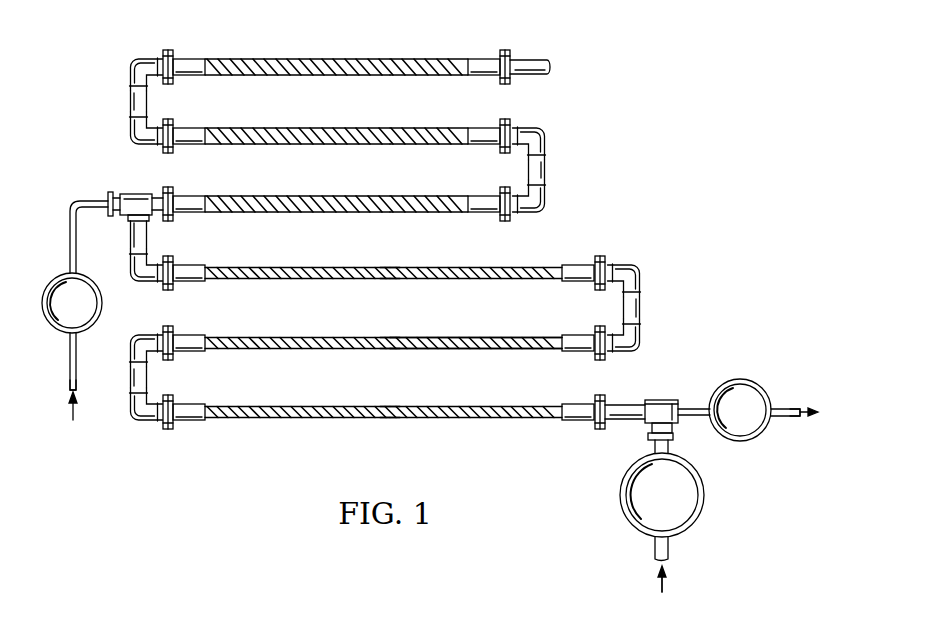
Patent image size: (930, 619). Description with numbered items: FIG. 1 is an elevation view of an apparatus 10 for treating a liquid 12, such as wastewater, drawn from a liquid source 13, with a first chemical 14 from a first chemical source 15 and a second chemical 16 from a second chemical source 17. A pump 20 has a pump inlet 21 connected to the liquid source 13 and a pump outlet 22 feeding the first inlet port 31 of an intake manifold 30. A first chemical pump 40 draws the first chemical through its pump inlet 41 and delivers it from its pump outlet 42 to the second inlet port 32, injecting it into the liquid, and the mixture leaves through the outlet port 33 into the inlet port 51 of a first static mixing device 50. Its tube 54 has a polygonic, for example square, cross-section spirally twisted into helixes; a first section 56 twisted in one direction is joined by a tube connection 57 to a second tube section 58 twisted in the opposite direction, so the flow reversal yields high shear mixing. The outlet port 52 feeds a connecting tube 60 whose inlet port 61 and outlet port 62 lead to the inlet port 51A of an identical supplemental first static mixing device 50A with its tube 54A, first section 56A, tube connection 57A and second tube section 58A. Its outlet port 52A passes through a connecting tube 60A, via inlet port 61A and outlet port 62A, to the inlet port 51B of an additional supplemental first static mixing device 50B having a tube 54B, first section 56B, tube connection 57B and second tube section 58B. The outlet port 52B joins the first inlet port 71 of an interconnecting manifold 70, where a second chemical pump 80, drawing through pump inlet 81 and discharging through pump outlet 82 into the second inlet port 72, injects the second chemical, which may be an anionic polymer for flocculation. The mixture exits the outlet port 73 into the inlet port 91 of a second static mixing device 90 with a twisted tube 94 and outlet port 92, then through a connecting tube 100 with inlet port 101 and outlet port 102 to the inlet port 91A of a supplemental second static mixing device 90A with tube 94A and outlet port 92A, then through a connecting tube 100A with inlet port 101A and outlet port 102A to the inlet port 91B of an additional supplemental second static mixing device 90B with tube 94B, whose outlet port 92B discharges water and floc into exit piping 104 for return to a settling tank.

The apparatus 10 is at (108, 42).
The liquid 12 is at (667, 583).
The liquid source 13 is at (659, 583).
The first chemical 14 is at (820, 408).
The first chemical source 15 is at (790, 406).
The second chemical 16 is at (73, 417).
The second chemical source 17 is at (70, 391).
The pump 20 is at (703, 500).
The pump inlet 21 is at (668, 545).
The pump outlet 22 is at (648, 440).
The intake manifold 30 is at (662, 401).
The first inlet port 31 is at (672, 447).
The second inlet port 32 is at (679, 405).
The outlet port 33 is at (648, 402).
The first chemical pump 40 is at (745, 440).
The pump inlet 41 is at (785, 417).
The pump outlet 42 is at (693, 416).
The first static mixing device 50 is at (318, 419).
The supplemental first static mixing device 50A is at (275, 349).
The additional supplemental first static mixing device 50B is at (268, 281).
The inlet port 51 is at (575, 405).
The inlet port 51A is at (190, 336).
The inlet port 51B is at (578, 266).
The outlet port 52 is at (190, 405).
The outlet port 52A is at (578, 336).
The outlet port 52B is at (193, 266).
The tube 54 is at (470, 419).
The tube 54A is at (455, 349).
The tube 54B is at (455, 337).
The first tube section 56 is at (500, 406).
The first tube section 56A is at (317, 337).
The first tube section 56B is at (498, 266).
The tube connection 57 is at (388, 406).
The tube connection 57A is at (382, 337).
The tube connection 57B is at (388, 266).
The second tube section 58 is at (300, 406).
The second tube section 58A is at (493, 337).
The second tube section 58B is at (315, 266).
The connecting tube 60 is at (130, 376).
The connecting tube 60A is at (641, 306).
The inlet port 61 is at (156, 421).
The inlet port 61A is at (621, 345).
The outlet port 62 is at (155, 331).
The outlet port 62A is at (620, 262).
The interconnecting manifold 70 is at (135, 194).
The first inlet port 71 is at (130, 246).
The second inlet port 72 is at (108, 199).
The outlet port 73 is at (168, 189).
The second chemical pump 80 is at (51, 283).
The pump inlet 81 is at (70, 348).
The pump outlet 82 is at (70, 246).
The second static mixing device 90 is at (287, 196).
The supplemental second static mixing device 90A is at (290, 127).
The additional supplemental second static mixing device 90B is at (290, 57).
The inlet port 91 is at (190, 196).
The inlet port 91A is at (482, 127).
The inlet port 91B is at (194, 56).
The outlet port 92 is at (478, 196).
The outlet port 92A is at (190, 127).
The outlet port 92B is at (482, 56).
The tube 94 is at (380, 196).
The tube 94A is at (391, 127).
The tube 94B is at (389, 57).
The connecting tube 100 is at (546, 170).
The connecting tube 100A is at (130, 96).
The inlet port 101 is at (521, 206).
The inlet port 101A is at (128, 133).
The outlet port 102 is at (522, 125).
The outlet port 102A is at (153, 57).
The exit piping 104 is at (531, 58).